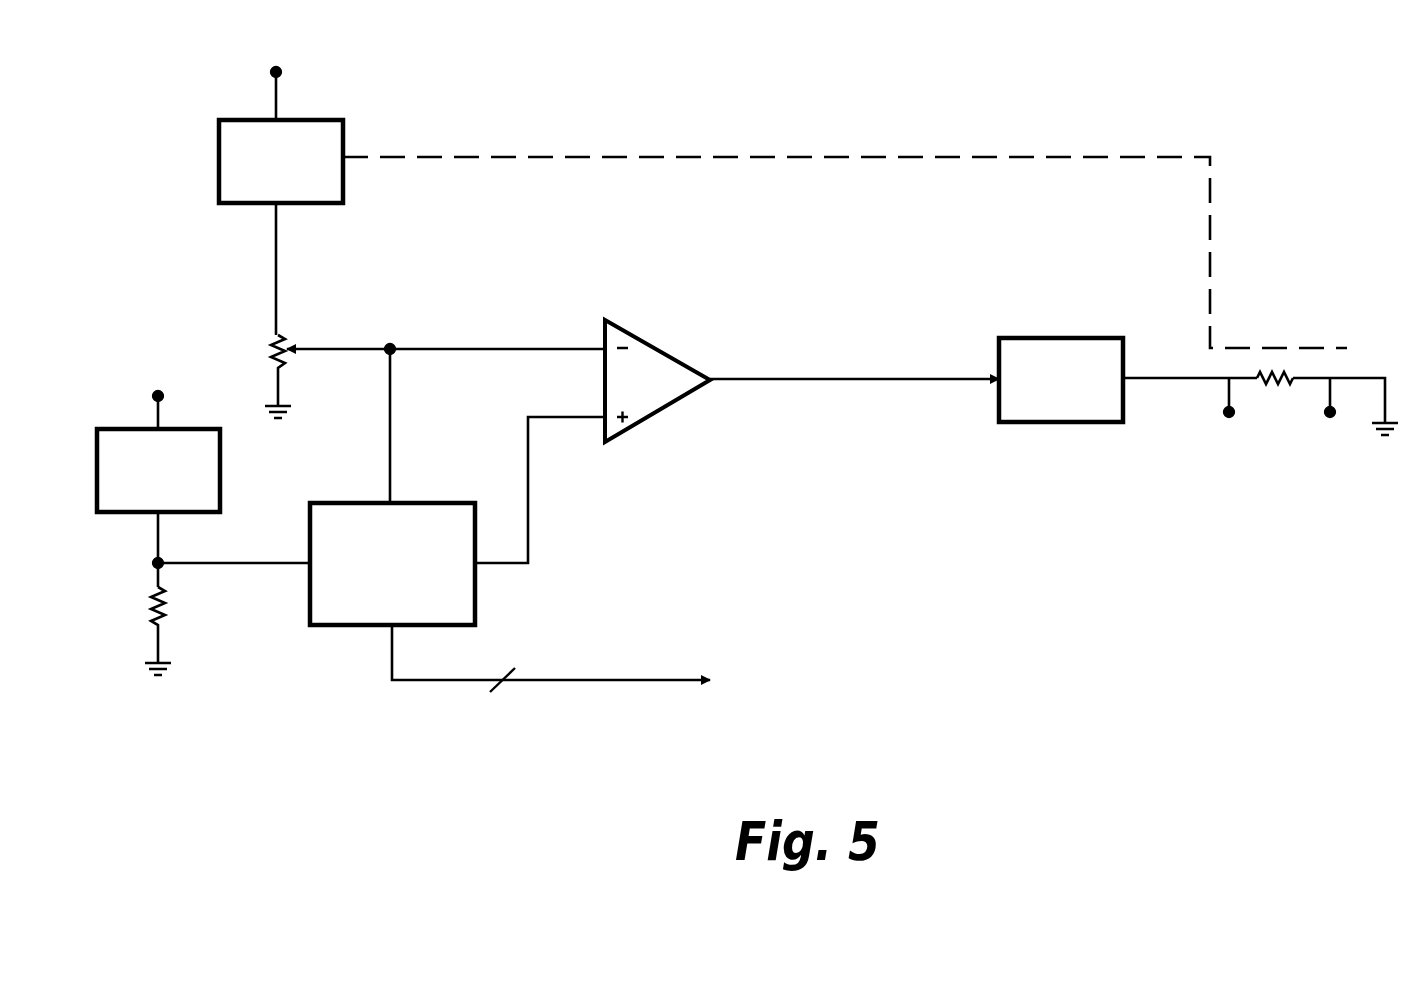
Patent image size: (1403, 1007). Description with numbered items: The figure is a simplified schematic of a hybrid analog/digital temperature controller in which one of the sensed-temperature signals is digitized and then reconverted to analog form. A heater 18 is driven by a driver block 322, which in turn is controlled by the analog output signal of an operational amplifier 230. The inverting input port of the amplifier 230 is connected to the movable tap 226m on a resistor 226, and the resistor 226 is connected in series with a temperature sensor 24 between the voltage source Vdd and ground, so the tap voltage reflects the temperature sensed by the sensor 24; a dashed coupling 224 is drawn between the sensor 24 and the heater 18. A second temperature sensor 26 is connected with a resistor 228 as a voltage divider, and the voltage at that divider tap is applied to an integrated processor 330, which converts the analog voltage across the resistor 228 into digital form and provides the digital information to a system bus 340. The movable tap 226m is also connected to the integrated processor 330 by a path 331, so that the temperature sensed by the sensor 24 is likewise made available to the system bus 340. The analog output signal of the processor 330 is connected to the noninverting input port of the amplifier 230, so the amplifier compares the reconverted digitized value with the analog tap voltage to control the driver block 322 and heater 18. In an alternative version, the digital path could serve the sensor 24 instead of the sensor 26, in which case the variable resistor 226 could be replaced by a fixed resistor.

The temperature sensor 24 is at (219, 157).
The thermal coupling (dashed) to heater 224 is at (770, 155).
The resistor 226 is at (275, 353).
The movable tap 226m is at (351, 349).
The temperature sensor 26 is at (99, 461).
The resistor 228 is at (188, 631).
The integrated processor 330 is at (360, 502).
The path 331 is at (392, 435).
The operational amplifier 230 is at (655, 342).
The driver block 322 is at (1065, 338).
The heater 18 is at (1275, 385).
The system bus 340 is at (617, 683).